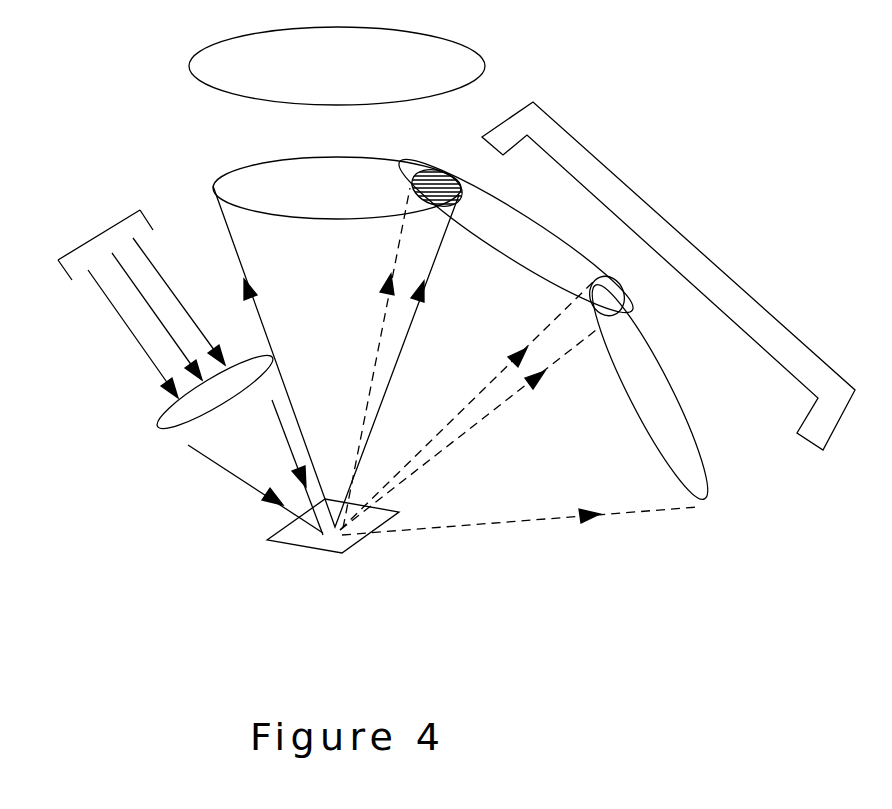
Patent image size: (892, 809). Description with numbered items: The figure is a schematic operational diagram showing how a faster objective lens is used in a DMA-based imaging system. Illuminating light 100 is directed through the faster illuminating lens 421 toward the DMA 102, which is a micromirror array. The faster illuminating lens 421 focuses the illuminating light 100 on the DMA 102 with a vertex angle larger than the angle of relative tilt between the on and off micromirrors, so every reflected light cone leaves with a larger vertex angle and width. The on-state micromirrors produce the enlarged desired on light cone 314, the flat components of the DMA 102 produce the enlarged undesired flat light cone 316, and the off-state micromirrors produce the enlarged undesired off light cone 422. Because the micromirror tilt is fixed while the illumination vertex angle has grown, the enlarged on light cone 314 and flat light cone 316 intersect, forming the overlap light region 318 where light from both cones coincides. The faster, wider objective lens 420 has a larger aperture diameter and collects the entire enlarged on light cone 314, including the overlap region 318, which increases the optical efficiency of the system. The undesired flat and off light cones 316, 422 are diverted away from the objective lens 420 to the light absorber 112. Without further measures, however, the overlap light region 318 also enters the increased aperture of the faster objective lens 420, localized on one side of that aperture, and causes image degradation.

The illuminating light 100 is at (95, 238).
The DMA 102 is at (323, 540).
The light absorber 112 is at (713, 282).
The enlarged on light cone 314 is at (325, 195).
The enlarged flat light cone 316 is at (523, 240).
The overlap light region 318 is at (433, 183).
The faster objective lens 420 is at (243, 67).
The faster illuminating lens 421 is at (177, 422).
The enlarged off light cone 422 is at (675, 455).